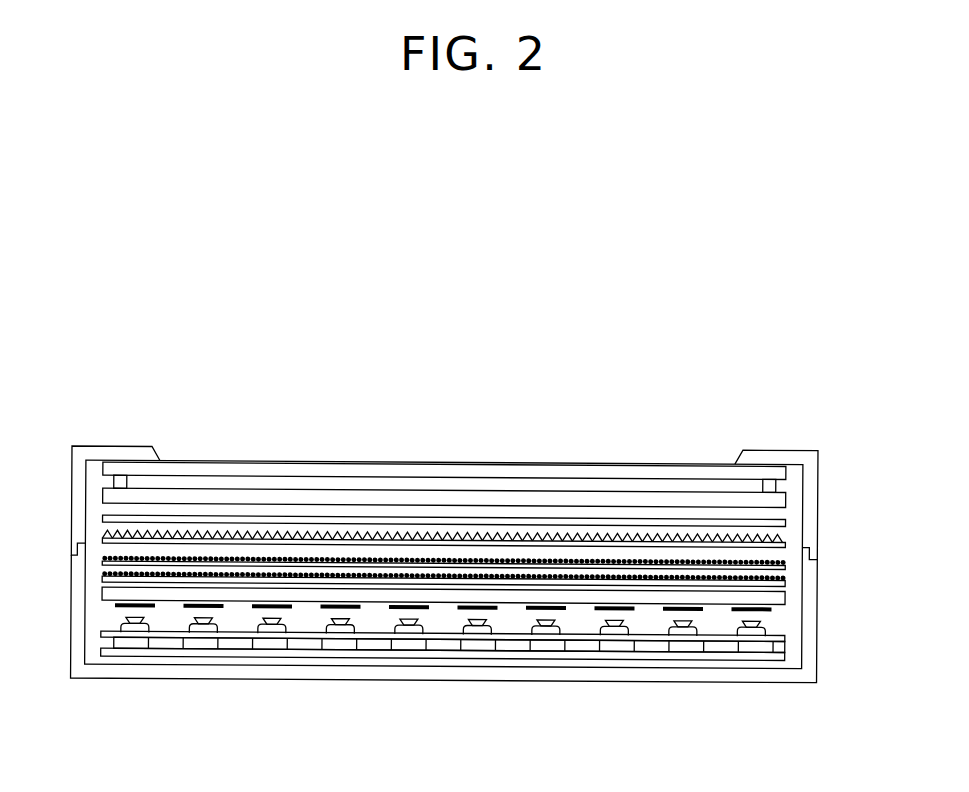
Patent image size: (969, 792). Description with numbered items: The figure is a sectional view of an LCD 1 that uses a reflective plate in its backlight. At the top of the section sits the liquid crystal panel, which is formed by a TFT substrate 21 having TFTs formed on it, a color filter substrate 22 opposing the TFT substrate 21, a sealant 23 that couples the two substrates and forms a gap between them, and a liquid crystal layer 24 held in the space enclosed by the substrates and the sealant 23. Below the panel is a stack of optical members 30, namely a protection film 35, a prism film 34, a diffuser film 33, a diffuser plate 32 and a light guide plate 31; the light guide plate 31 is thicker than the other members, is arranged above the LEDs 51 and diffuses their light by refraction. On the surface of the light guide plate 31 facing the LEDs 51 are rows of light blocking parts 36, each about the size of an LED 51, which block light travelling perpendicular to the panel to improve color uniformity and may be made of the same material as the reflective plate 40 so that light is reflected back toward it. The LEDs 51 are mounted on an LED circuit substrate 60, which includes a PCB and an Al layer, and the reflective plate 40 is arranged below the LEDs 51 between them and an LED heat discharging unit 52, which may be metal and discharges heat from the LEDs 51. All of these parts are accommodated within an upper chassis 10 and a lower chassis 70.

The LCD 1 is at (622, 305).
The upper chassis 10 is at (120, 450).
The TFT substrate 21 is at (718, 497).
The color filter substrate 22 is at (662, 468).
The sealant 23 is at (770, 485).
The liquid crystal layer 24 is at (553, 483).
The optical members 30 is at (510, 577).
The light guide plate 31 is at (488, 615).
The diffuser plate 32 is at (786, 583).
The diffuser film 33 is at (786, 564).
The prism film 34 is at (788, 541).
The protection film 35 is at (787, 520).
The light blocking part 36 is at (115, 601).
The reflective plate 40 is at (778, 648).
The LED 51 is at (118, 618).
The LED heat discharging unit 52 is at (110, 645).
The LED circuit substrate 60 is at (800, 663).
The lower chassis 70 is at (633, 678).